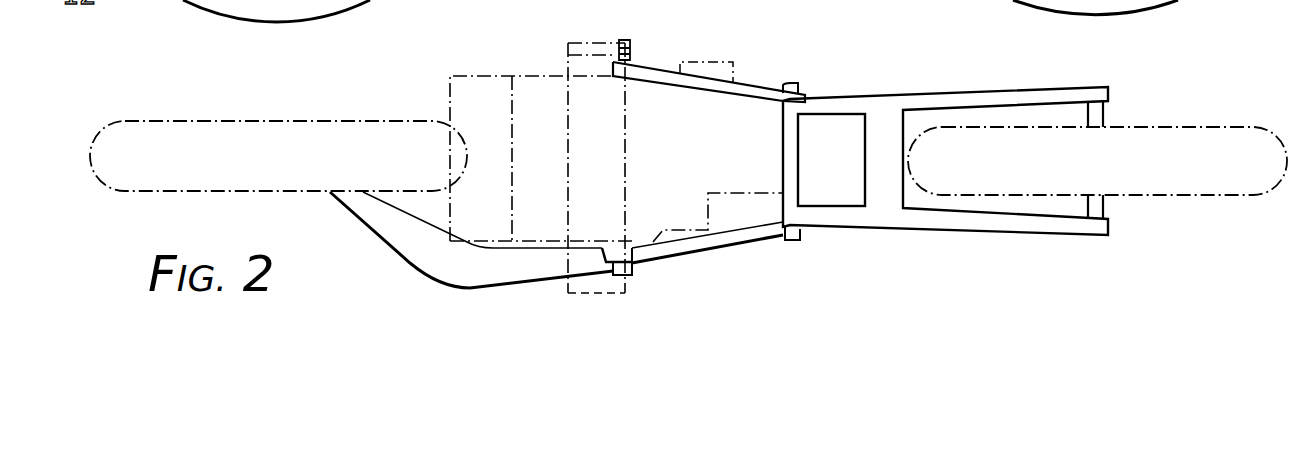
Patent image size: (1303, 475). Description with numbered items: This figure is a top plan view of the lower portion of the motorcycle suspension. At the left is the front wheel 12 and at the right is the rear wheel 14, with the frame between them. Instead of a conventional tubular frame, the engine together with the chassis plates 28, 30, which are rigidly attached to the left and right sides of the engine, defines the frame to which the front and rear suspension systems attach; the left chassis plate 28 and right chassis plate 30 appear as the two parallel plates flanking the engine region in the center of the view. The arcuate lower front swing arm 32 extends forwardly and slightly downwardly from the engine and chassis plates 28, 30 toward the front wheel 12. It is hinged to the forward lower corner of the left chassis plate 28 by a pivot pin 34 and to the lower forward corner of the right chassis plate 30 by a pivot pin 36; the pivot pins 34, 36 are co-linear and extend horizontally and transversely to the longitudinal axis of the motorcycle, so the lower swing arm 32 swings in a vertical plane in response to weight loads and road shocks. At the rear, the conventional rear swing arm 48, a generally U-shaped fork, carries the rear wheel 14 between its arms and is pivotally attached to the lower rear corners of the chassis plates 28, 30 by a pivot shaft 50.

The front wheel 12 is at (238, 115).
The rear wheel 14 is at (1174, 127).
The left chassis plate 28 is at (712, 250).
The right chassis plate 30 is at (750, 82).
The lower front swing arm 32 is at (502, 277).
The pivot pin 34 is at (623, 278).
The pivot pin 36 is at (623, 38).
The rear swing arm 48 is at (1010, 223).
The pivot shaft 50 is at (788, 240).